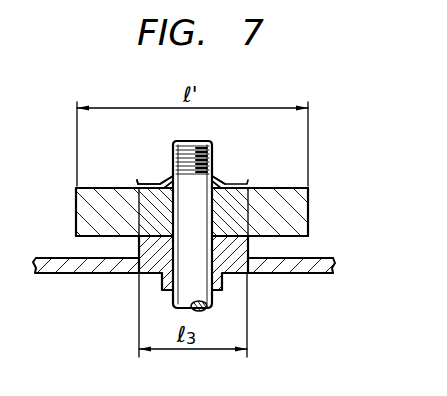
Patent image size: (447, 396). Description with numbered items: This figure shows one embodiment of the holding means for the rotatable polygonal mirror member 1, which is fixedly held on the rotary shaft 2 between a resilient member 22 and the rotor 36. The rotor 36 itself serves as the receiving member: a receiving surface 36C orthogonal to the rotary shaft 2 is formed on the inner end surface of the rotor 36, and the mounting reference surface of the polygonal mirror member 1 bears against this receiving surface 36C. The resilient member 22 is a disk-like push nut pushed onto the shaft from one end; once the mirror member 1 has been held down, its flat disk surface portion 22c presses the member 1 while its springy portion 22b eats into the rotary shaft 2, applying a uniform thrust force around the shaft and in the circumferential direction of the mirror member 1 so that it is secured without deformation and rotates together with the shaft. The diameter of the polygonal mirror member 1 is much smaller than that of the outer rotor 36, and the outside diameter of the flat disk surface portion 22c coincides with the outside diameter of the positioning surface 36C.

The rotatable polygonal mirror member 1 is at (102, 194).
The rotary shaft 2 is at (210, 304).
The resilient member 22 is at (238, 187).
The portion fitting on the rotary shaft 22b is at (163, 178).
The flat disk surface portion 22c is at (140, 183).
The rotor 36 is at (308, 261).
The receiving surface 36C is at (248, 229).